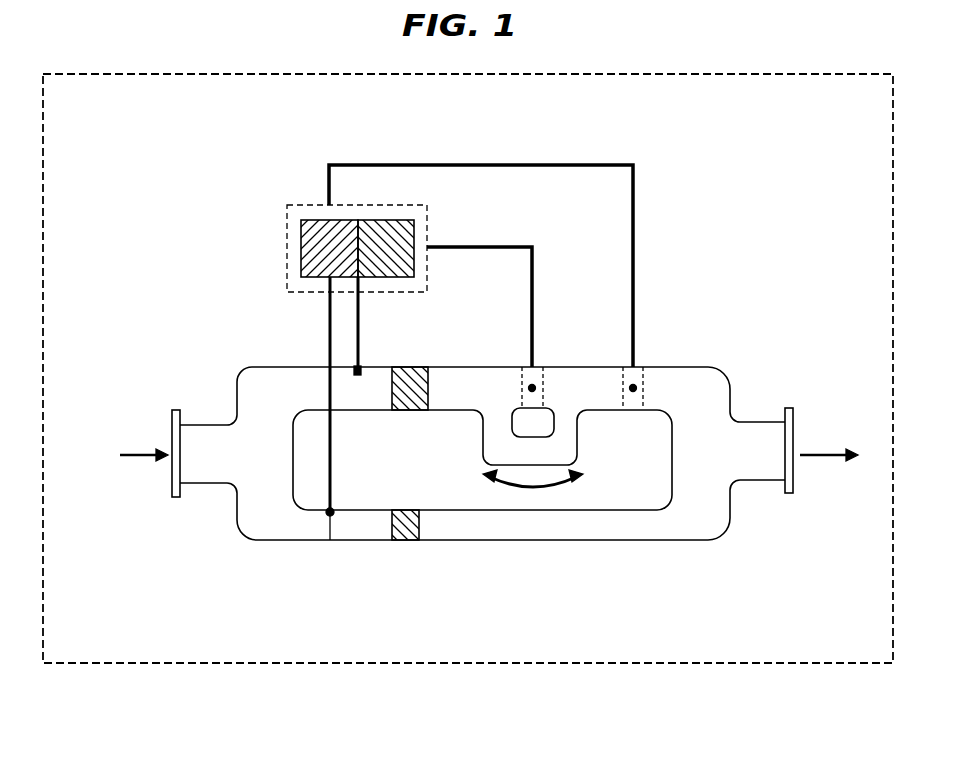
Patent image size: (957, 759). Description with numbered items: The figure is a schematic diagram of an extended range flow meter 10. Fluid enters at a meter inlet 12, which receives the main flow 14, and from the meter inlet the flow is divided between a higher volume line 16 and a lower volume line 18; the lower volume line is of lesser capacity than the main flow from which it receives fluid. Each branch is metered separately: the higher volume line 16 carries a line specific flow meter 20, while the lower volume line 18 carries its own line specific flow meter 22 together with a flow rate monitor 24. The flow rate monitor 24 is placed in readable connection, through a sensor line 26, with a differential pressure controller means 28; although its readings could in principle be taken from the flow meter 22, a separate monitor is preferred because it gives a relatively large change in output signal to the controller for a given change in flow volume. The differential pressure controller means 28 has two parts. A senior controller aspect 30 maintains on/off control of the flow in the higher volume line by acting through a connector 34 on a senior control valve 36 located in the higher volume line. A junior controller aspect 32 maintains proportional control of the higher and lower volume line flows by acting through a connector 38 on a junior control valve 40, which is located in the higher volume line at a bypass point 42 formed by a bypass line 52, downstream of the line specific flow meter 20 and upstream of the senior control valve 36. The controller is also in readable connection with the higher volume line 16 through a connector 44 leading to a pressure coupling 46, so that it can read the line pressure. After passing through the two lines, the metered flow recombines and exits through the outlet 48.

The extended range flow meter 10 is at (545, 648).
The meter inlet 12 is at (173, 498).
The main flow 14 is at (477, 456).
The higher volume line 16 is at (285, 386).
The lower volume line 18 is at (296, 520).
The line specific flow meter 20 is at (420, 367).
The line specific flow meter 22 is at (408, 540).
The flow rate monitor 24 is at (330, 540).
The sensor line 26 is at (330, 470).
The differential pressure controller means 28 is at (305, 205).
The senior controller aspect 30 is at (305, 243).
The junior controller aspect 32 is at (398, 240).
The connector 34 is at (513, 165).
The senior control valve 36 is at (633, 388).
The connector 38 is at (532, 246).
The junior control valve 40 is at (532, 388).
The bypass point 42 is at (540, 486).
The connector 44 is at (330, 320).
The pressure coupling 46 is at (358, 367).
The outlet 48 is at (790, 495).
The bypass line 52 is at (507, 437).